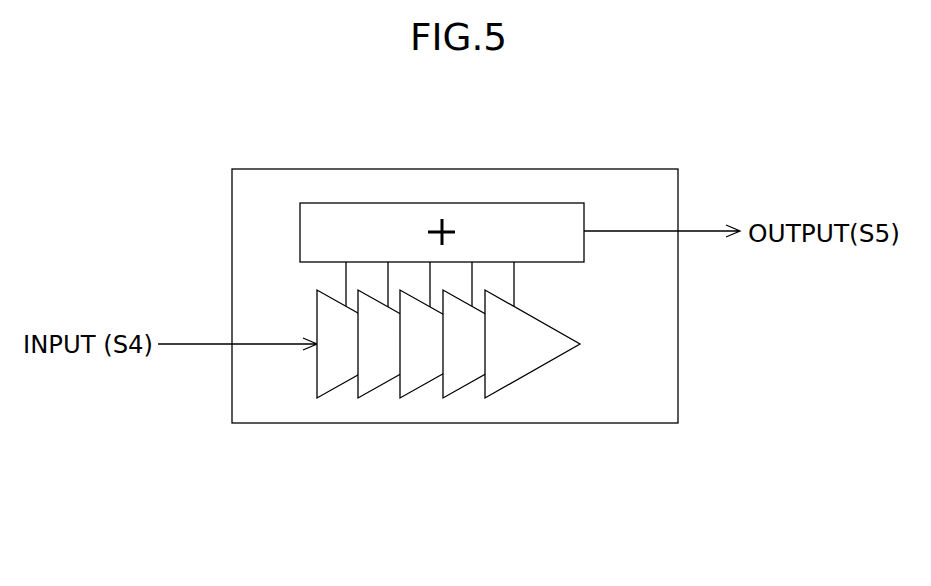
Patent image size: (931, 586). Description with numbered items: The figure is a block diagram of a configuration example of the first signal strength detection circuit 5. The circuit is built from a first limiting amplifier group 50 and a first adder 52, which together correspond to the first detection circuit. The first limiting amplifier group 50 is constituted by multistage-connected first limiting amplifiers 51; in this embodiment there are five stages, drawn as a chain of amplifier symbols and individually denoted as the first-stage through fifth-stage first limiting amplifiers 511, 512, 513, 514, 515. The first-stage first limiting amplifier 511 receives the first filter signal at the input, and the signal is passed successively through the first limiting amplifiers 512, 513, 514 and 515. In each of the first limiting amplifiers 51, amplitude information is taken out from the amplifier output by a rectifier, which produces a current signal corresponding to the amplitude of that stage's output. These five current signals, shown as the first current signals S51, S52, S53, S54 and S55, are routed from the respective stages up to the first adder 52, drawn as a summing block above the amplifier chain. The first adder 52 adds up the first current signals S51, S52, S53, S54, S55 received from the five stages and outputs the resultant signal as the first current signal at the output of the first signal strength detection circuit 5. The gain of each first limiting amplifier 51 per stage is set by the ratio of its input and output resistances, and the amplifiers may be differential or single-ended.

The first signal strength detection circuit 5 is at (232, 210).
The first limiting amplifier group 50 is at (456, 327).
The first limiting amplifier 51 is at (391, 327).
The first-stage first limiting amplifier 511 is at (315, 375).
The second-stage first limiting amplifier 512 is at (355, 385).
The third-stage first limiting amplifier 513 is at (398, 388).
The fourth-stage first limiting amplifier 514 is at (465, 387).
The fifth-stage first limiting amplifier 515 is at (552, 382).
The first adder 52 is at (585, 218).
The first current signal S51 is at (343, 278).
The first current signal S52 is at (384, 279).
The first current signal S53 is at (428, 279).
The first current signal S54 is at (473, 279).
The first current signal S55 is at (516, 279).